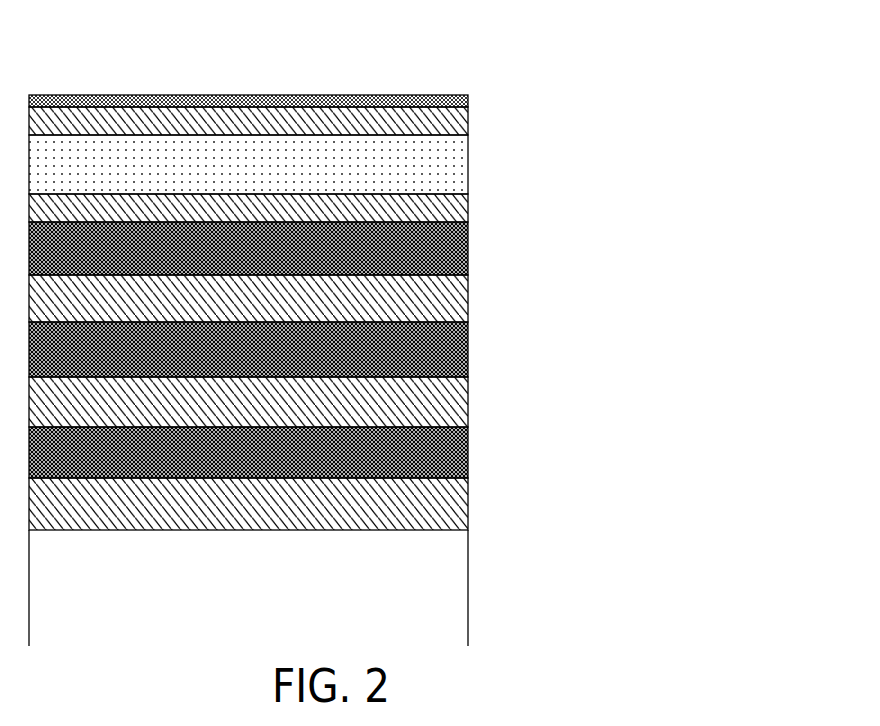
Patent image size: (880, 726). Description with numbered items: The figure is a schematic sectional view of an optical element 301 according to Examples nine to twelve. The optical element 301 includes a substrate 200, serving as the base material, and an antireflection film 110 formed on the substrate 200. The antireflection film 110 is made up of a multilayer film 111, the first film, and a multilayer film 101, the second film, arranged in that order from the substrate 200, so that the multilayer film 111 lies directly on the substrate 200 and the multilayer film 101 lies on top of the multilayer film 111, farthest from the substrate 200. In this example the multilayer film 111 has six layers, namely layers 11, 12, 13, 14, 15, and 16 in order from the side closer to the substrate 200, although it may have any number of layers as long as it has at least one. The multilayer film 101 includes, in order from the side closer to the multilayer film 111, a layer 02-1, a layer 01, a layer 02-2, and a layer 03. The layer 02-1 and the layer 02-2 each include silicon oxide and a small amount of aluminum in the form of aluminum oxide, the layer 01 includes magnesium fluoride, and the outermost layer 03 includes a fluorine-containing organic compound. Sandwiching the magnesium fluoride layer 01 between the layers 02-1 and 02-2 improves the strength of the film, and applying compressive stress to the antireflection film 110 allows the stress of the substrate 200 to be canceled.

The optical element 301 is at (268, 61).
The antireflection film 110 is at (414, 307).
The multilayer film (second film) 101 is at (364, 149).
The multilayer film (first film) 111 is at (364, 383).
The layer (fourth layer) 03 is at (468, 103).
The layer (third layer) 02-2 is at (468, 118).
The layer (second layer) 01 is at (468, 160).
The layer (first layer) 02-1 is at (309, 211).
The layer 16 is at (468, 255).
The layer 15 is at (468, 308).
The layer 14 is at (468, 358).
The layer 13 is at (468, 410).
The layer 12 is at (468, 460).
The layer 11 is at (297, 511).
The substrate (base material) 200 is at (448, 602).